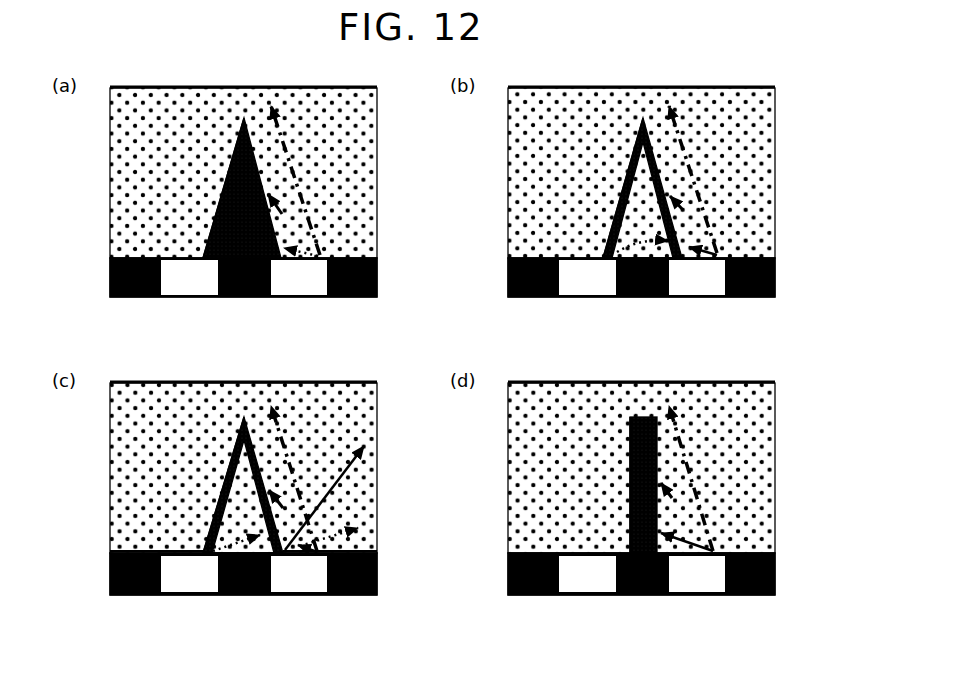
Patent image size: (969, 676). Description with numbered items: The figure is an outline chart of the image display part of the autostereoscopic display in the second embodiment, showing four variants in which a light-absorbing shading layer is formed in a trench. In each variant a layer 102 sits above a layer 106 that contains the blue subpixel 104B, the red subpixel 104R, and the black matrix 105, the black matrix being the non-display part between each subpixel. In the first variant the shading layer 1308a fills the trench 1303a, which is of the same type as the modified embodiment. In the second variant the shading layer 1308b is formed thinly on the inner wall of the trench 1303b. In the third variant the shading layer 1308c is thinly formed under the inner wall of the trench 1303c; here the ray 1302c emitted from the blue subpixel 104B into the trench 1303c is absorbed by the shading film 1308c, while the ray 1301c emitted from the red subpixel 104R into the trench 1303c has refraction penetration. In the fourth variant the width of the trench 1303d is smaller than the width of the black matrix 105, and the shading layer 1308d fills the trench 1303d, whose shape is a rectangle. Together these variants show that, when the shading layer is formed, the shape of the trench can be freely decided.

The transparent layer 102 is at (416, 320).
The substrate layer 106 is at (416, 426).
The black matrix 105 is at (442, 452).
The blue subpixel 104B is at (388, 453).
The red subpixel 104R is at (498, 453).
The shading layer 1308a is at (229, 170).
The trench 1303a is at (222, 199).
The shading layer 1308b is at (632, 158).
The trench 1303b is at (619, 203).
The shading layer 1308c is at (232, 457).
The trench 1303c is at (221, 492).
The ray 1302c is at (200, 550).
The ray 1301c is at (322, 537).
The shading layer 1308d is at (630, 458).
The trench 1303d is at (630, 488).